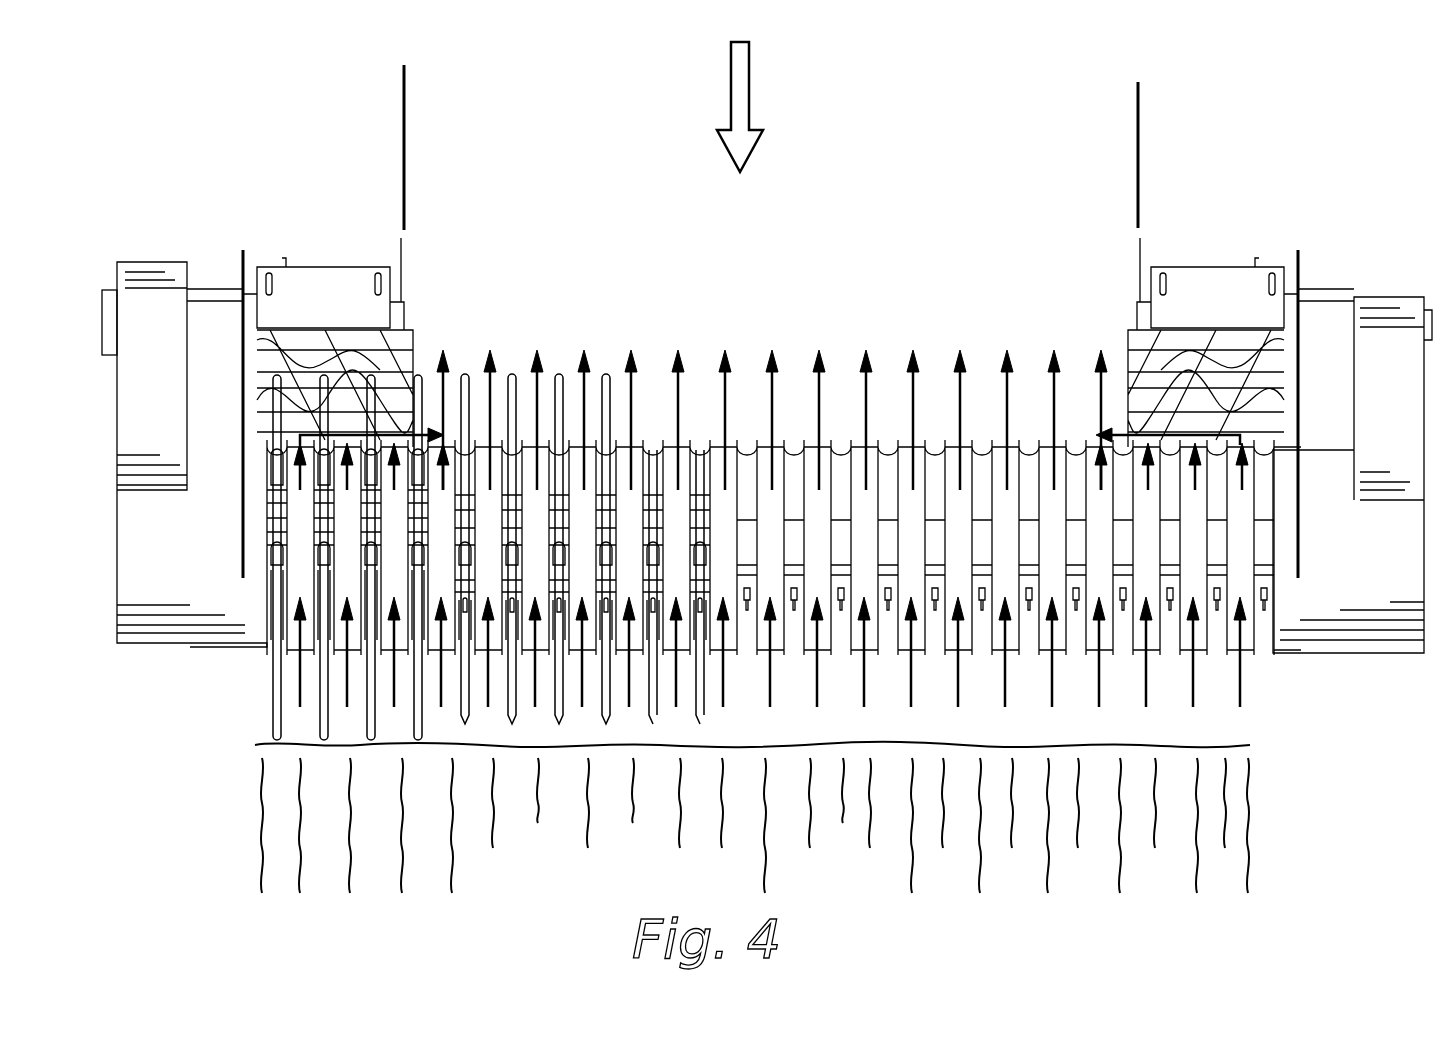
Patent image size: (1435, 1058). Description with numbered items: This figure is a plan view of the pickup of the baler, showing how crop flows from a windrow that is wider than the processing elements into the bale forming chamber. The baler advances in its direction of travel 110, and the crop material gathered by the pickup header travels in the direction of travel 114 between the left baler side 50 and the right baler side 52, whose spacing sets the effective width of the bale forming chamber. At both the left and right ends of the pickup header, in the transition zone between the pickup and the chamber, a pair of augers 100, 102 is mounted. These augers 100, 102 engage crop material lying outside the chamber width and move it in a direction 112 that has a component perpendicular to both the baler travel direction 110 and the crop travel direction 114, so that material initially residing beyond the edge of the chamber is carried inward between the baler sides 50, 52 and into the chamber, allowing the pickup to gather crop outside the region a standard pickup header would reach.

The left baler side 50 is at (1138, 130).
The right baler side 52 is at (403, 127).
The auger 100 is at (345, 395).
The auger 102 is at (385, 345).
The direction of travel of the baler 110 is at (750, 88).
The direction of crop movement by the augers 112 is at (438, 438).
The direction of travel of the crop material 114 is at (773, 357).